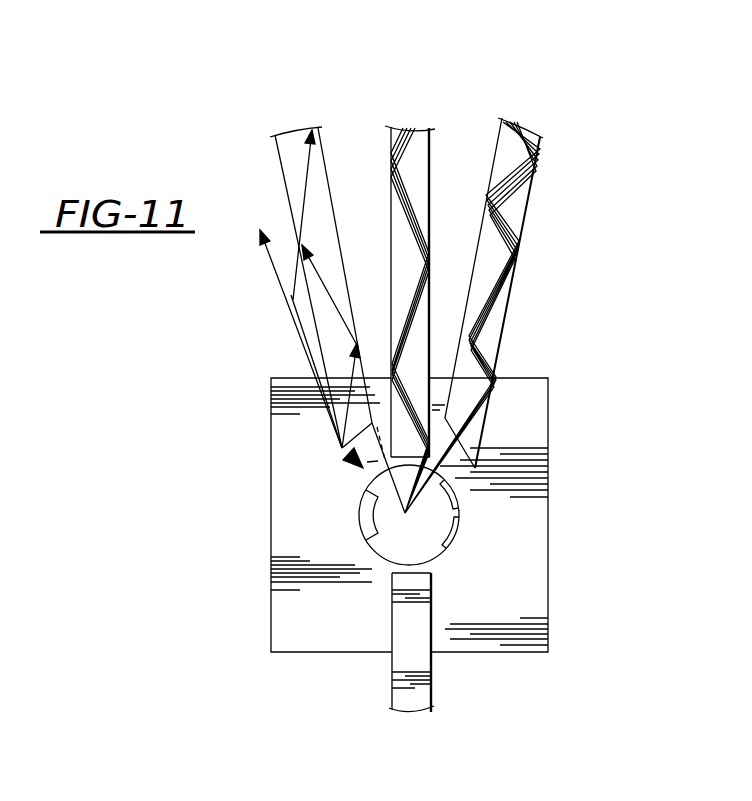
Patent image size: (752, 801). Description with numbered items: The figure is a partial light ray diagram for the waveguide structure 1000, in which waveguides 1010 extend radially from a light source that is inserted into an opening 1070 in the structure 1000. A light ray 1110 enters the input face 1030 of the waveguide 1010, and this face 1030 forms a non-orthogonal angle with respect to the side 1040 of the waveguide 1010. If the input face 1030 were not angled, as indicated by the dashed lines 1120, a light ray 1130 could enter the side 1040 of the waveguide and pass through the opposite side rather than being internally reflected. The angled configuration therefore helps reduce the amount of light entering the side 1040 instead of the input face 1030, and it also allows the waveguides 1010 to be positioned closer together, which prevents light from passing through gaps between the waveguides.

The waveguide structure 1000 is at (528, 480).
The waveguide 1010 is at (295, 148).
The input face 1030 is at (355, 465).
The side 1040 is at (330, 197).
The opening 1070 is at (418, 538).
The light ray 1110 is at (350, 388).
The dashed lines 1120 is at (360, 470).
The light ray 1130 is at (288, 295).